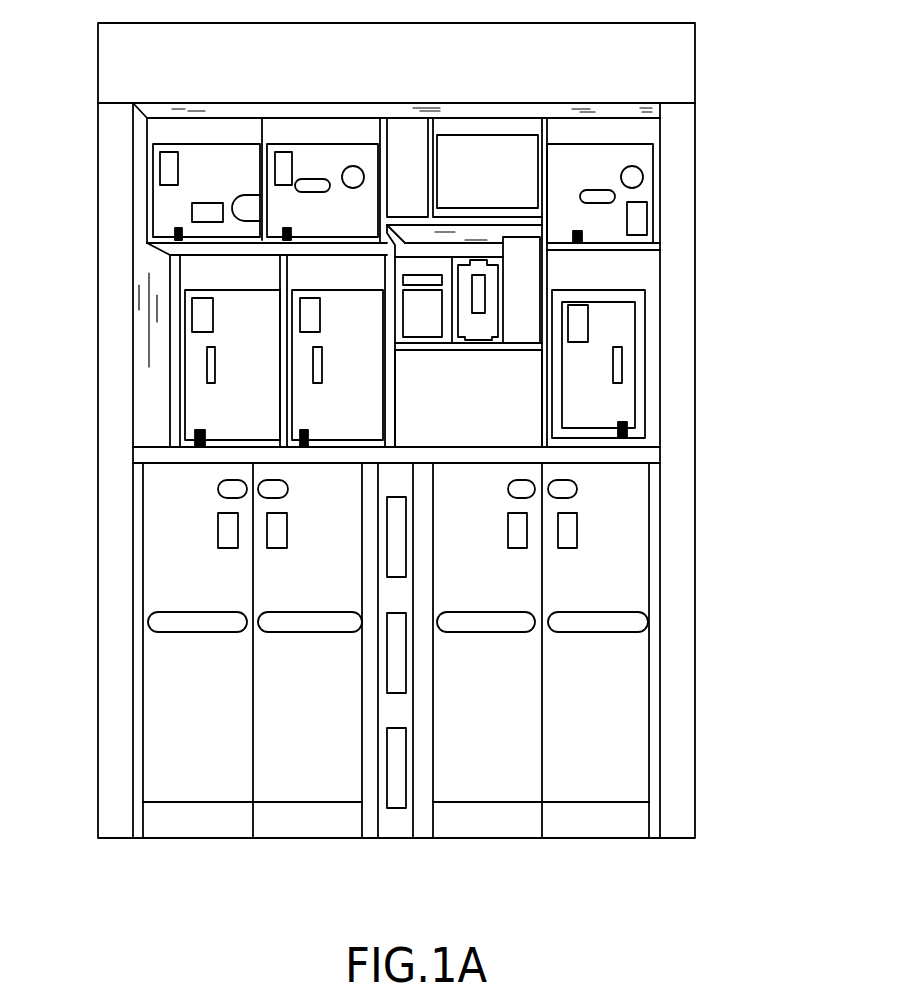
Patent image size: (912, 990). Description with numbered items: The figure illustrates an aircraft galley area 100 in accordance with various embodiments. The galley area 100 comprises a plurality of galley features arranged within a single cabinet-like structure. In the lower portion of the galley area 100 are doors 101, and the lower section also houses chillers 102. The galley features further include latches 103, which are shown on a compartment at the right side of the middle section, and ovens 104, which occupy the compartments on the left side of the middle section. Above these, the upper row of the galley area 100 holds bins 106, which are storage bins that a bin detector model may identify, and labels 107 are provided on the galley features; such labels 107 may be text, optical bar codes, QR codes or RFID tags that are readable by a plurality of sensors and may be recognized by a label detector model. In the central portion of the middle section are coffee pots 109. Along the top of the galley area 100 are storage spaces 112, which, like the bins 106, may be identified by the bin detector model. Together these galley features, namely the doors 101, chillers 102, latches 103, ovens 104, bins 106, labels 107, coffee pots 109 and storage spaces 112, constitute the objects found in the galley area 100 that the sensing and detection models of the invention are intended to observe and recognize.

The aircraft galley area 100 is at (696, 271).
The doors 101 is at (605, 577).
The chillers 102 is at (590, 757).
The latches 103 is at (627, 431).
The ovens 104 is at (205, 402).
The bins 106 is at (588, 160).
The labels 107 is at (168, 167).
The coffee pots 109 is at (493, 282).
The storage spaces 112 is at (632, 127).